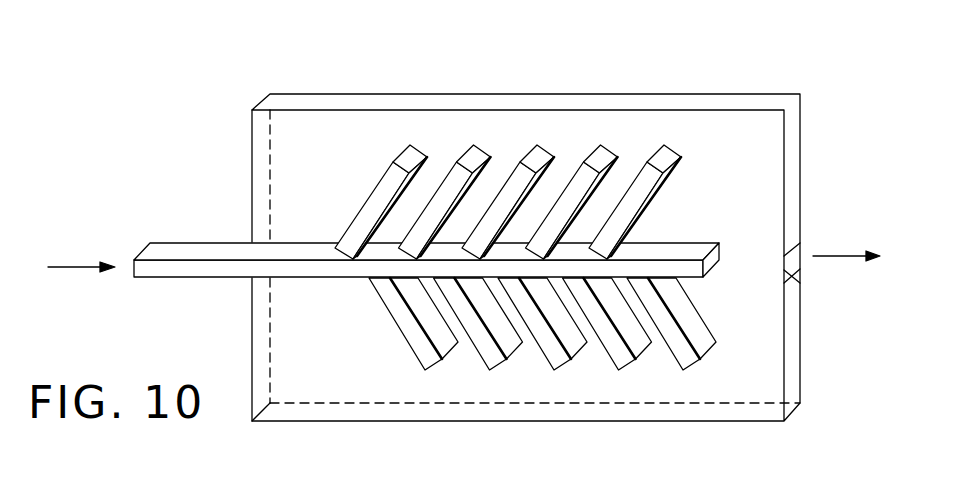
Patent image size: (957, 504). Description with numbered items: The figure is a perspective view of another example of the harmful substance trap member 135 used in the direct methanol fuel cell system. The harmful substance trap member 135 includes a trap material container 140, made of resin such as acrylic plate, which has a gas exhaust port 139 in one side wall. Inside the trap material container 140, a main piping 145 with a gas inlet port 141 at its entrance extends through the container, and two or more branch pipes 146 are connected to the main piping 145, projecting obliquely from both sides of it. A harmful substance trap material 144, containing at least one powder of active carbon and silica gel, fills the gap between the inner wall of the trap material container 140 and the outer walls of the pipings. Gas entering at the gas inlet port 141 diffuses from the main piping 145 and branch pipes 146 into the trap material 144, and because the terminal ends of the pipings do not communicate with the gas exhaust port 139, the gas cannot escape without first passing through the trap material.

The harmful substance trap member 135 is at (471, 218).
The trap material container 140 is at (709, 96).
The gas inlet port 141 is at (132, 272).
The harmful substance trap material 144 is at (773, 181).
The gas exhaust port 139 is at (789, 275).
The main piping 145 is at (312, 276).
The branch pipes 146 is at (472, 147).